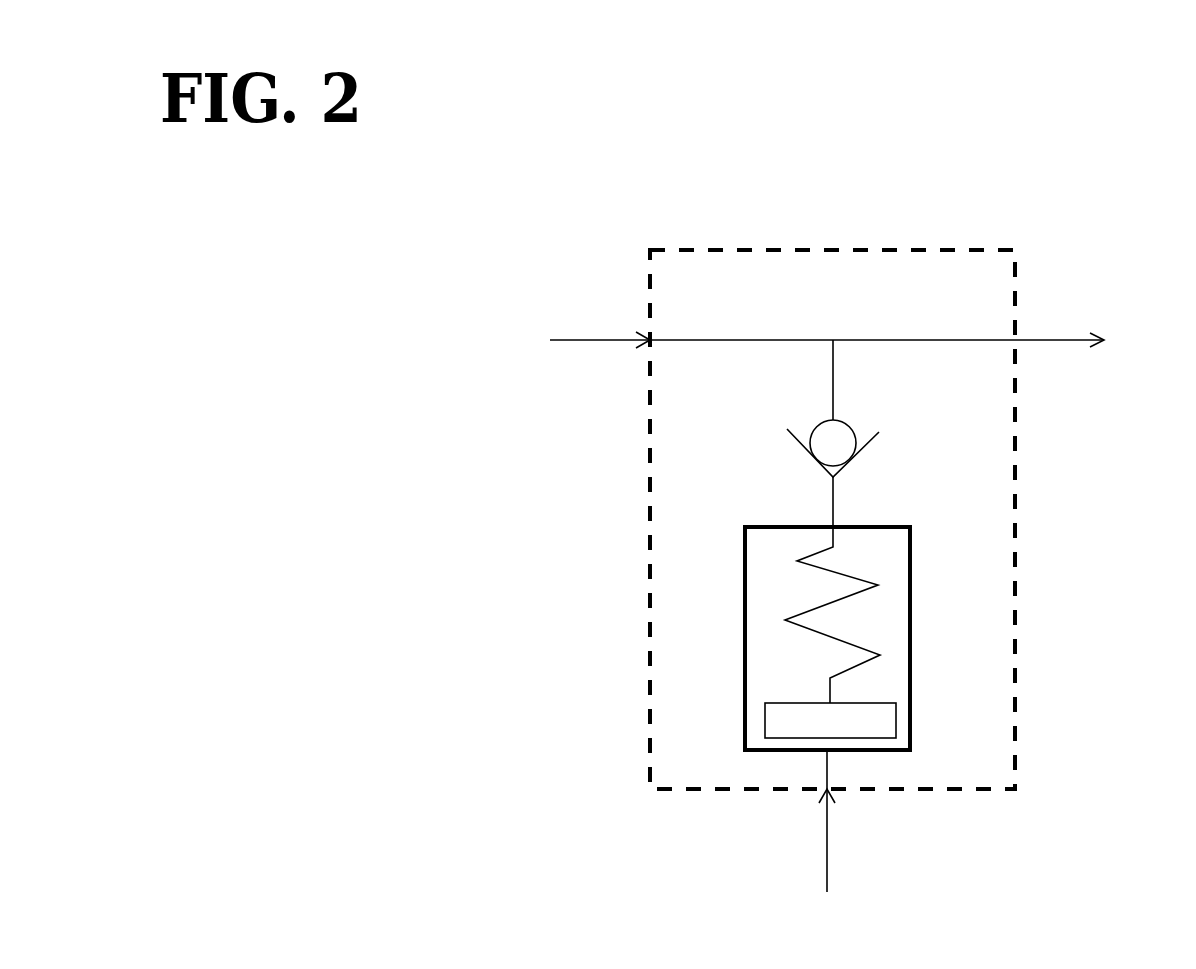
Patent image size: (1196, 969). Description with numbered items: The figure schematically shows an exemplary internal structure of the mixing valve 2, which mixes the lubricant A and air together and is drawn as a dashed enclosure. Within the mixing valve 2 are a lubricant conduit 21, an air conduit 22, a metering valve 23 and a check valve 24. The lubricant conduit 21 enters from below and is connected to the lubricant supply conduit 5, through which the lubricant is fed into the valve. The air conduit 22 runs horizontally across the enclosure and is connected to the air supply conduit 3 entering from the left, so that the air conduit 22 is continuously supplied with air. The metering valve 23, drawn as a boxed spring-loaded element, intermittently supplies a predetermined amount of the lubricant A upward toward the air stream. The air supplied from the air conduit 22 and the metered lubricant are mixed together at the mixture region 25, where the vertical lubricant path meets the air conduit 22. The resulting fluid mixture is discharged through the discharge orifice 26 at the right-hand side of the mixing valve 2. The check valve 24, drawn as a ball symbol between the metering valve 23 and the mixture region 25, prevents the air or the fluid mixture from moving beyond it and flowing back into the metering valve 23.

The mixing valve 2 is at (933, 250).
The air supply conduit 3 is at (614, 342).
The lubricant supply conduit 5 is at (826, 851).
The lubricant conduit 21 is at (828, 777).
The air conduit 22 is at (731, 341).
The metering valve 23 is at (912, 645).
The check valve 24 is at (843, 450).
The mixture region 25 is at (833, 340).
The discharge orifice 26 is at (1017, 342).